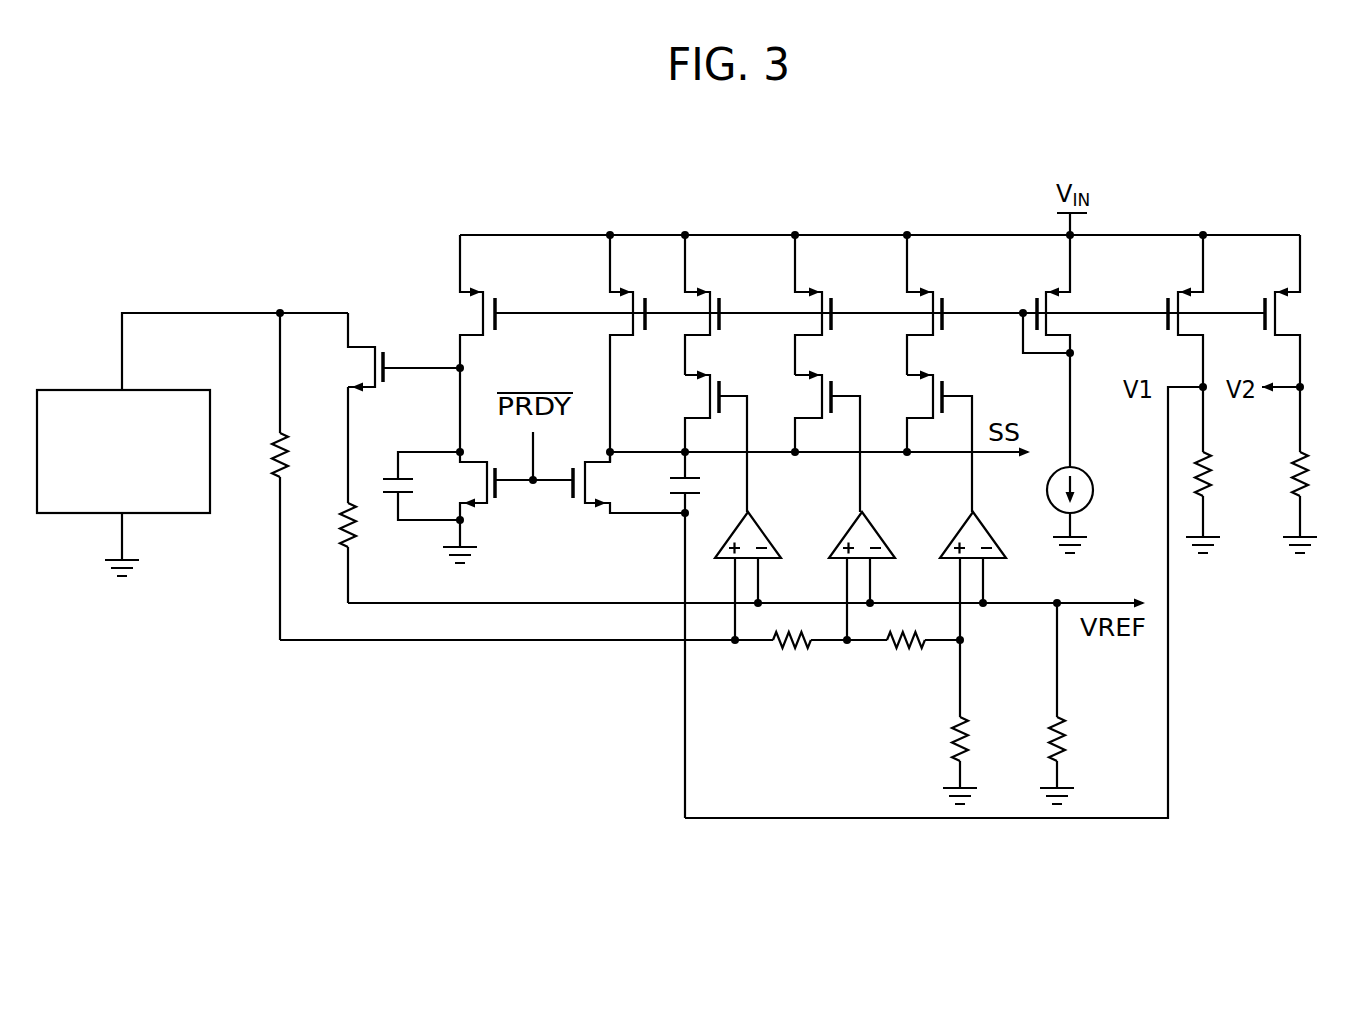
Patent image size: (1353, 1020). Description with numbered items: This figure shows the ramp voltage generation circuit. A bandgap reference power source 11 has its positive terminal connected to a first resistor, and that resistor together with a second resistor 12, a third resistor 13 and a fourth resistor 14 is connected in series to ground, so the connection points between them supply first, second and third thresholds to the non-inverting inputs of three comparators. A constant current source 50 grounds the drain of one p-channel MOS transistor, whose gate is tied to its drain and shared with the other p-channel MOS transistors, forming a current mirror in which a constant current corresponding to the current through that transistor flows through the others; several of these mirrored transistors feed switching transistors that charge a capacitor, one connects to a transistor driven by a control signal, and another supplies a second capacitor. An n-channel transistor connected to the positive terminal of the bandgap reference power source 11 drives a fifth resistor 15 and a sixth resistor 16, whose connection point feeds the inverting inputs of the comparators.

The bandgap reference power source 11 is at (68, 390).
The constant current source 50 is at (1091, 477).
The resistor R12 12 is at (794, 659).
The resistor R13 13 is at (904, 659).
The resistor R14 14 is at (986, 722).
The resistor R15 15 is at (322, 495).
The resistor R16 16 is at (1082, 703).